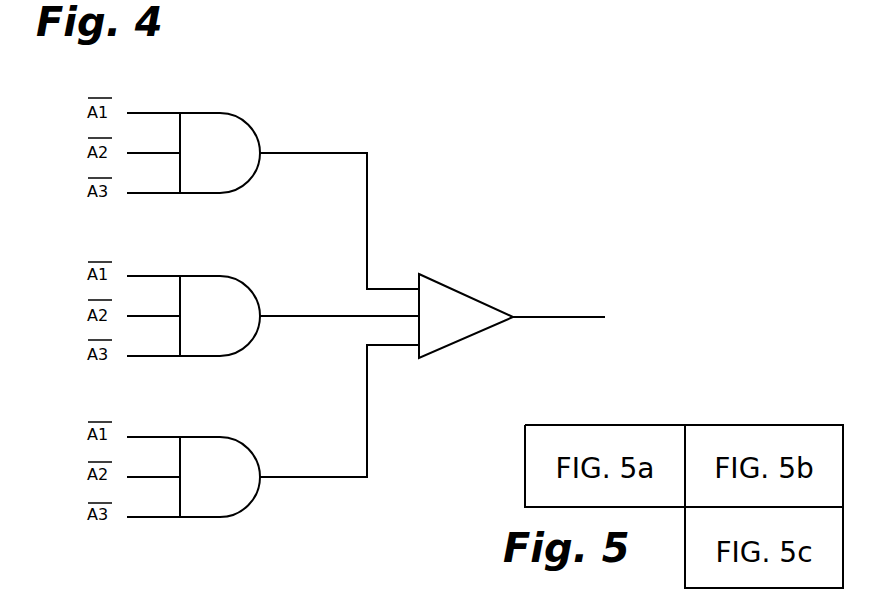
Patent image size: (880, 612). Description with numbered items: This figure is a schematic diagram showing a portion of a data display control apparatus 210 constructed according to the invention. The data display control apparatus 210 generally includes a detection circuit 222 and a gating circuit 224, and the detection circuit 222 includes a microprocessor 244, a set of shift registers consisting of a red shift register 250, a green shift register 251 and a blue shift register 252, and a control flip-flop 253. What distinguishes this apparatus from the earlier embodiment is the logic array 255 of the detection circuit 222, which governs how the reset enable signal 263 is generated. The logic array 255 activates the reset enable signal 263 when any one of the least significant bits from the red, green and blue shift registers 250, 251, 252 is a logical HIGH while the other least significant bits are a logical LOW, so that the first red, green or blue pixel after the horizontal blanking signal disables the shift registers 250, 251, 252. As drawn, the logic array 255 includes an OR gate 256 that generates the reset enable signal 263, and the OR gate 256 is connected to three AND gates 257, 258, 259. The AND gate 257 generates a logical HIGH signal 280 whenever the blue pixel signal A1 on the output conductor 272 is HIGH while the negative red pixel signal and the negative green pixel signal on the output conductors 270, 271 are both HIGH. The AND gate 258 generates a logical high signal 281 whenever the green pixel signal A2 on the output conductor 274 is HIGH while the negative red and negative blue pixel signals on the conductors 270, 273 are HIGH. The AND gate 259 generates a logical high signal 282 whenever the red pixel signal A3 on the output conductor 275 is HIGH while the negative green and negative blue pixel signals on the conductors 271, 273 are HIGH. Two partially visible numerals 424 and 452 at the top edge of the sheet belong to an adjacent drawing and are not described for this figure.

The data display control apparatus 210 is at (704, 85).
The detection circuit 222 is at (634, 128).
The gating circuit 224 is at (539, 155).
The microprocessor 244 is at (605, 266).
The red shift register 250 is at (740, 141).
The green shift register 251 is at (740, 195).
The blue shift register 252 is at (712, 276).
The control flip-flop 253 is at (700, 317).
The logic array 255 is at (567, 209).
The OR gate 256 is at (477, 335).
The AND gate 257 is at (258, 135).
The AND gate 258 is at (230, 274).
The AND gate 259 is at (253, 447).
The reset enable signal 263 is at (558, 316).
The output conductor 270 is at (148, 195).
The output conductor 271 is at (145, 155).
The output conductor 272 is at (139, 112).
The conductor 273 is at (157, 274).
The output conductor 274 is at (145, 316).
The output conductor 275 is at (162, 518).
The logical HIGH signal 280 is at (368, 198).
The logical high signal 281 is at (283, 313).
The logical high signal 282 is at (397, 346).
The element of preceding figure 424 is at (363, 0).
The element of preceding figure 452 is at (453, 0).